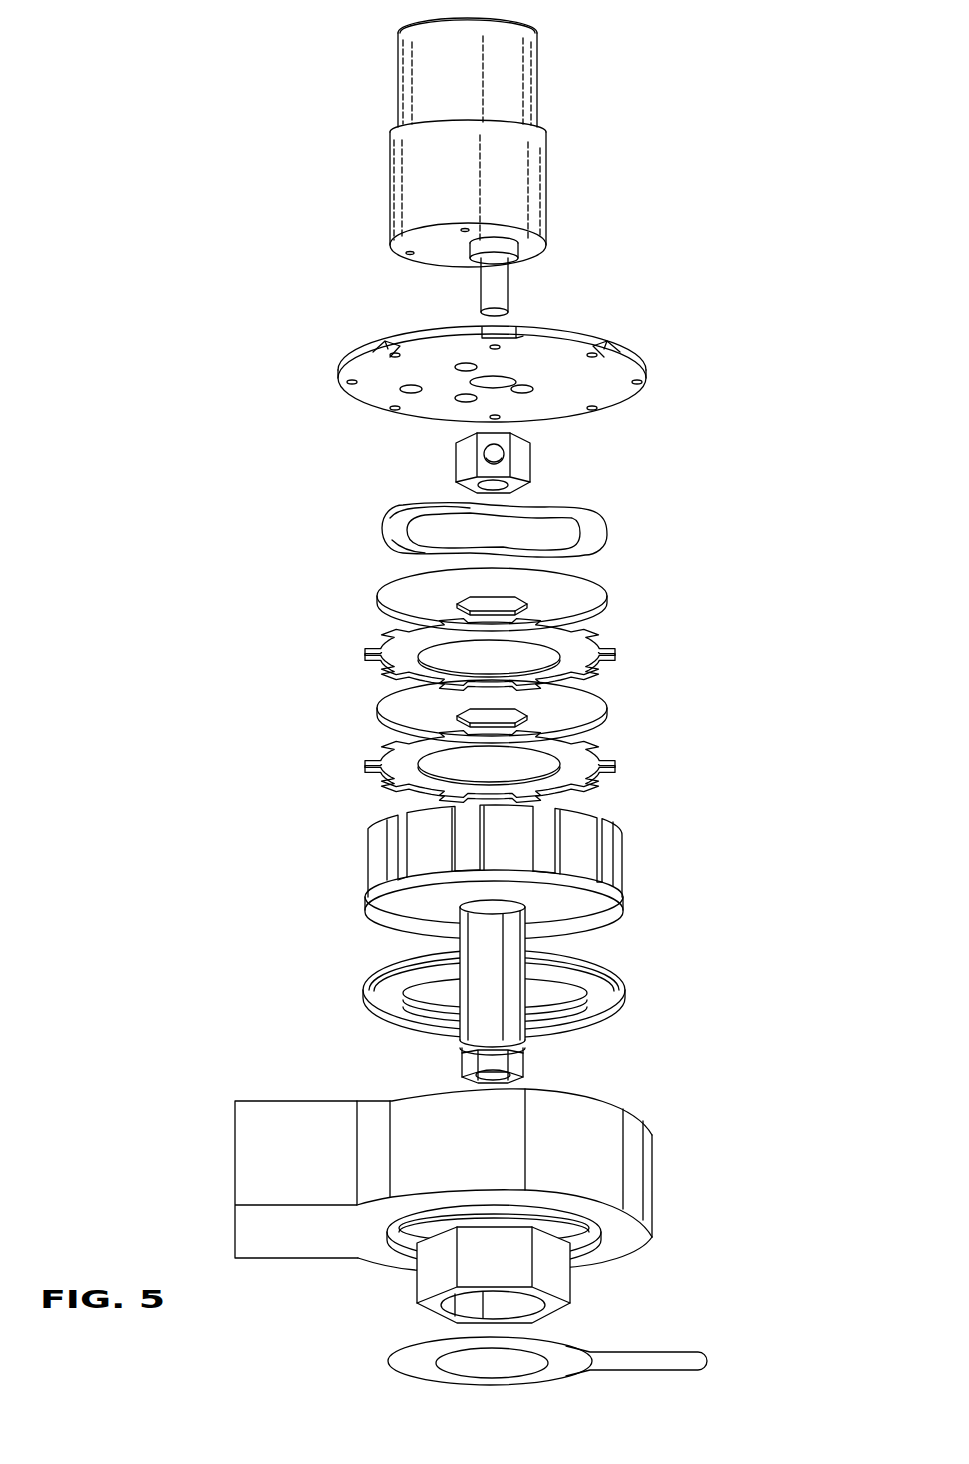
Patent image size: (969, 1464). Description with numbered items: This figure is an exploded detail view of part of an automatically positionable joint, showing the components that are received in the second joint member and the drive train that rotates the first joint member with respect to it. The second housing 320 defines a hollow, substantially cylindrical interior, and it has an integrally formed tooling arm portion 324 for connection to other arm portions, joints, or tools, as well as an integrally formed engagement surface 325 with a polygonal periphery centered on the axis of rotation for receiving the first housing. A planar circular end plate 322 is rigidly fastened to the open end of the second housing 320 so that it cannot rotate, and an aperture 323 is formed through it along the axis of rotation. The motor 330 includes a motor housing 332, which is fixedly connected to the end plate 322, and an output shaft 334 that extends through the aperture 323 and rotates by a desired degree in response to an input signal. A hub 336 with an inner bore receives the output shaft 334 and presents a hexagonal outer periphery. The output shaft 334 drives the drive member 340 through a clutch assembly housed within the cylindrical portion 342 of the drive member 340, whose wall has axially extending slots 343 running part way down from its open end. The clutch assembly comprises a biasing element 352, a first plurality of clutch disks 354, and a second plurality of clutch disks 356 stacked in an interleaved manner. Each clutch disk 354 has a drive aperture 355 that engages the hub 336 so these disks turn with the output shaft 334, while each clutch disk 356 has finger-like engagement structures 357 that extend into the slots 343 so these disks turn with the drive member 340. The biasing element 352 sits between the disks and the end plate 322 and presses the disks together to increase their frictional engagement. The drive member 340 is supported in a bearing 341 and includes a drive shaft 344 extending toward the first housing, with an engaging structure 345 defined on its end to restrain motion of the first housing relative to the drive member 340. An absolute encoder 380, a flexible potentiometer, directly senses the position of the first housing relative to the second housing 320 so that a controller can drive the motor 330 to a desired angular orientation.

The second housing 320 is at (490, 1173).
The end plate 322 is at (529, 354).
The aperture 323 is at (507, 382).
The tooling arm portion 324 is at (290, 1117).
The engagement surface 325 is at (560, 1277).
The motor 330 is at (471, 167).
The motor housing 332 is at (410, 211).
The output shaft 334 is at (497, 296).
The hub 336 is at (523, 466).
The drive member 340 is at (500, 944).
The bearing 341 is at (626, 996).
The cylindrical portion 342 is at (372, 868).
The slots 343 is at (398, 855).
The drive shaft 344 is at (473, 915).
The engaging structure 345 is at (523, 1064).
The biasing element 352 is at (597, 531).
The first plurality of clutch disks 354 is at (503, 655).
The drive aperture 355 is at (377, 604).
The second plurality of clutch disks 356 is at (505, 712).
The engagement structures 357 is at (366, 657).
The absolute encoder 380 is at (396, 1363).